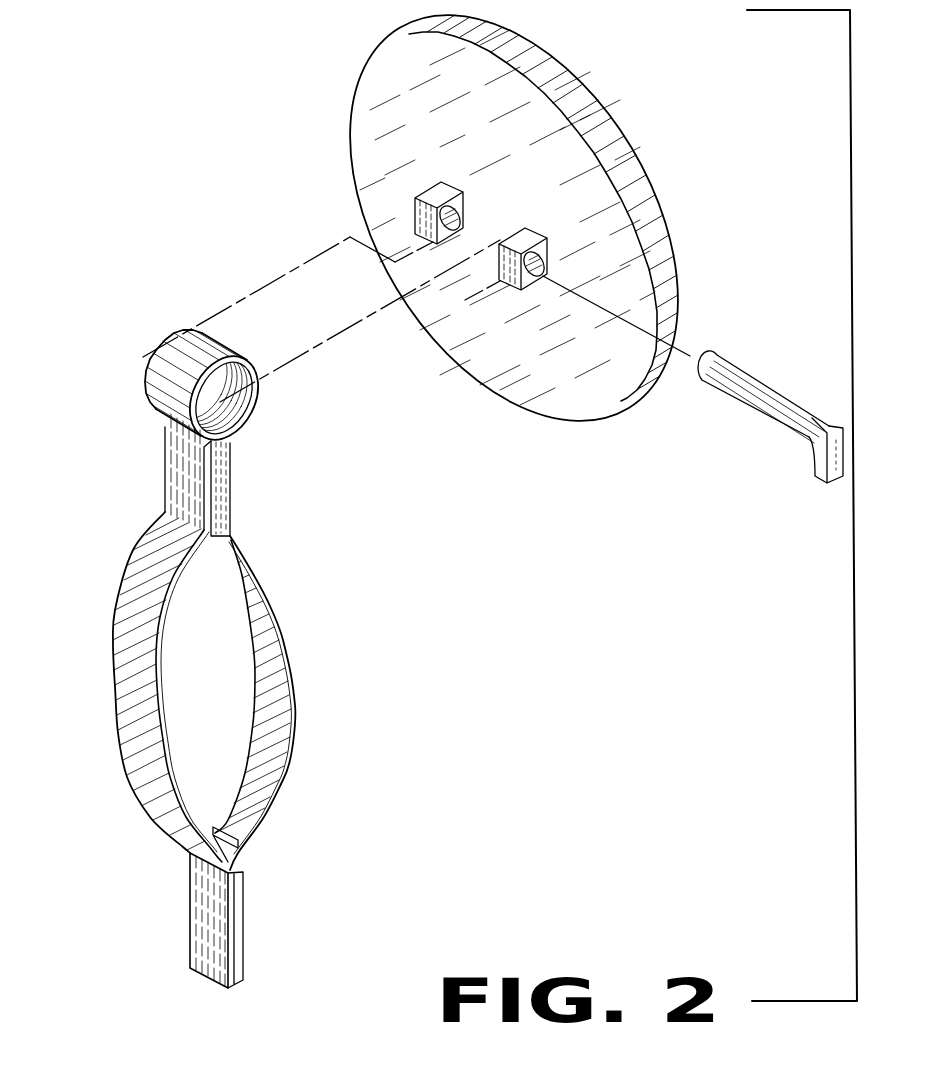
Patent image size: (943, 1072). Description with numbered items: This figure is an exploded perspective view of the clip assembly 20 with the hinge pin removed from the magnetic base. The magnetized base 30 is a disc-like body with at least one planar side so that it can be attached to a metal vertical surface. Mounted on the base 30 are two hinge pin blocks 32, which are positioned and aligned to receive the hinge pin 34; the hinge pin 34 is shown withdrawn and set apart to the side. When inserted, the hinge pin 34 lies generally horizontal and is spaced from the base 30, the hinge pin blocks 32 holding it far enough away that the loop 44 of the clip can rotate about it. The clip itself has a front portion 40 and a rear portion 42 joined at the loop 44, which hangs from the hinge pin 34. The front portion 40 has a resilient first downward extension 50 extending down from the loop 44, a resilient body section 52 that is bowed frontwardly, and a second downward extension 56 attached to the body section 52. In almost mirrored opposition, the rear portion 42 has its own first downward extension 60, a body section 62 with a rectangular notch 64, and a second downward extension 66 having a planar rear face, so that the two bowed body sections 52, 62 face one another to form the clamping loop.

The hanger assembly 20 is at (480, 732).
The magnetized base 30 is at (593, 108).
The hinge pin blocks 32 is at (417, 212).
The hinge pin 34 is at (778, 388).
The front portion 40 is at (127, 514).
The rear portion 42 is at (315, 634).
The loop 44 is at (238, 438).
The first downward extension 50 is at (185, 478).
The body section 52 is at (122, 677).
The second downward extension 56 is at (241, 912).
The first downward extension 60 is at (232, 492).
The body section 62 is at (283, 582).
The rectangular notch 64 is at (214, 838).
The second downward extension 66 is at (190, 909).